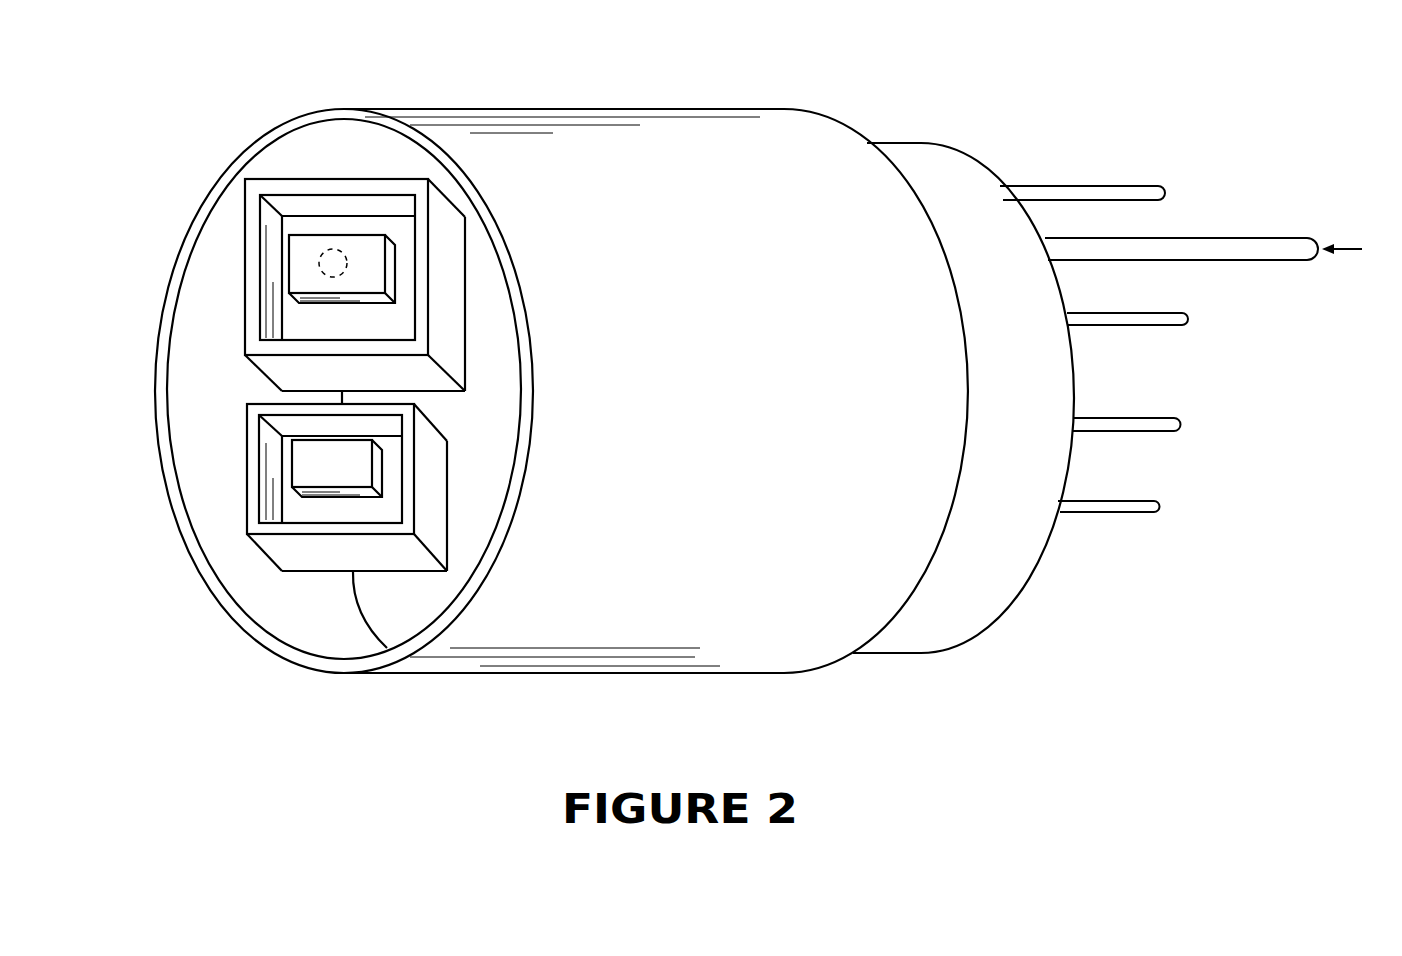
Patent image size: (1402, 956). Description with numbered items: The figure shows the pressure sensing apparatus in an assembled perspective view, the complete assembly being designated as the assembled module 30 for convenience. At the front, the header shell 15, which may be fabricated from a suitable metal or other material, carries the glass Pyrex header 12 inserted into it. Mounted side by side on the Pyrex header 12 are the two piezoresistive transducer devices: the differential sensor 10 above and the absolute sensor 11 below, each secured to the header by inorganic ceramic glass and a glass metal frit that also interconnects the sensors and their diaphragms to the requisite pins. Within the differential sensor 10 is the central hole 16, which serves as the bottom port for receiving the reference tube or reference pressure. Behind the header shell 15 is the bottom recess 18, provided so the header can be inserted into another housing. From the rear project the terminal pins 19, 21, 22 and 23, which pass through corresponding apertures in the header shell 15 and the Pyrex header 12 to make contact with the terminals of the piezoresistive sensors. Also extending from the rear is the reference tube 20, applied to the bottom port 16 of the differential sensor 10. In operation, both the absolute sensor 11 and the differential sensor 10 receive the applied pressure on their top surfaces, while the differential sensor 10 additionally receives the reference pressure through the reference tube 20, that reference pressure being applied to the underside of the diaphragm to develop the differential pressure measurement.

The differential sensor 10 is at (253, 195).
The absolute sensor 11 is at (252, 408).
The Pyrex header 12 is at (353, 178).
The header shell 15 is at (645, 145).
The central hole 16 is at (332, 245).
The bottom recess 18 is at (900, 160).
The pin 19 is at (1070, 188).
The reference tube 20 is at (1225, 248).
The pin 21 is at (1173, 325).
The pin 22 is at (1165, 432).
The pin 23 is at (1140, 513).
The assembled module 30 is at (591, 33).